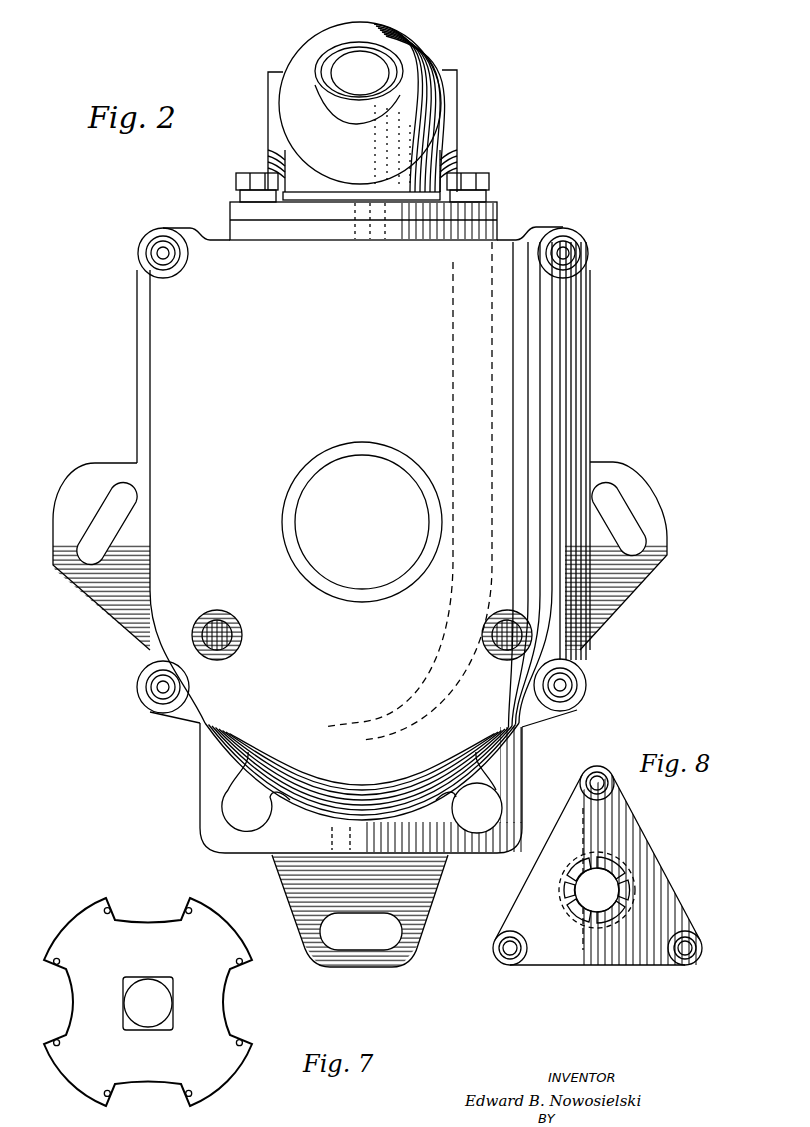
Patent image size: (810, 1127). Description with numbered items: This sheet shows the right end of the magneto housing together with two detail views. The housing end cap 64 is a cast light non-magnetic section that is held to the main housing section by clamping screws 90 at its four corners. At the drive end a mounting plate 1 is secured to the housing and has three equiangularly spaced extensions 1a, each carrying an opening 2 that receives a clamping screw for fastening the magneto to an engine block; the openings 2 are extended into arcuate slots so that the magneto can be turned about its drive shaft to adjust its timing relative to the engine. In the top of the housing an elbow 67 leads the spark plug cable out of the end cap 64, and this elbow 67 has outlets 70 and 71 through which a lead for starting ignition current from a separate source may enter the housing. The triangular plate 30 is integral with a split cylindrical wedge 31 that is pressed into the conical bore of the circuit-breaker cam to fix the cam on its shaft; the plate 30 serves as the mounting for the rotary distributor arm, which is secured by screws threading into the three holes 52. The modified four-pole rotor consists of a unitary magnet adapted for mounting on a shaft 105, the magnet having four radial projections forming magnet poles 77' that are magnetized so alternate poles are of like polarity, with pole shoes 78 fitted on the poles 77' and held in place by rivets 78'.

In FIG. 2, the mounting plate 1 is at (115, 630).
In FIG. 2, the extensions 1a is at (100, 593).
In FIG. 2, the openings 2 is at (117, 497).
In FIG. 2, the end cap 64 is at (215, 263).
In FIG. 2, the elbow 67 is at (420, 178).
In FIG. 2, the outlet 70 is at (376, 58).
In FIG. 2, the outlet 71 is at (268, 113).
In FIG. 2, the clamping screws 90 is at (157, 255).
In FIG. 7, the magnet poles 77' is at (154, 1002).
In FIG. 7, the pole shoes 78 is at (141, 1011).
In FIG. 7, the rivets 78' is at (203, 963).
In FIG. 7, the shaft 105 is at (165, 980).
In FIG. 8, the plate 30 is at (628, 826).
In FIG. 8, the wedge 31 is at (625, 878).
In FIG. 8, the holes 52 is at (614, 782).